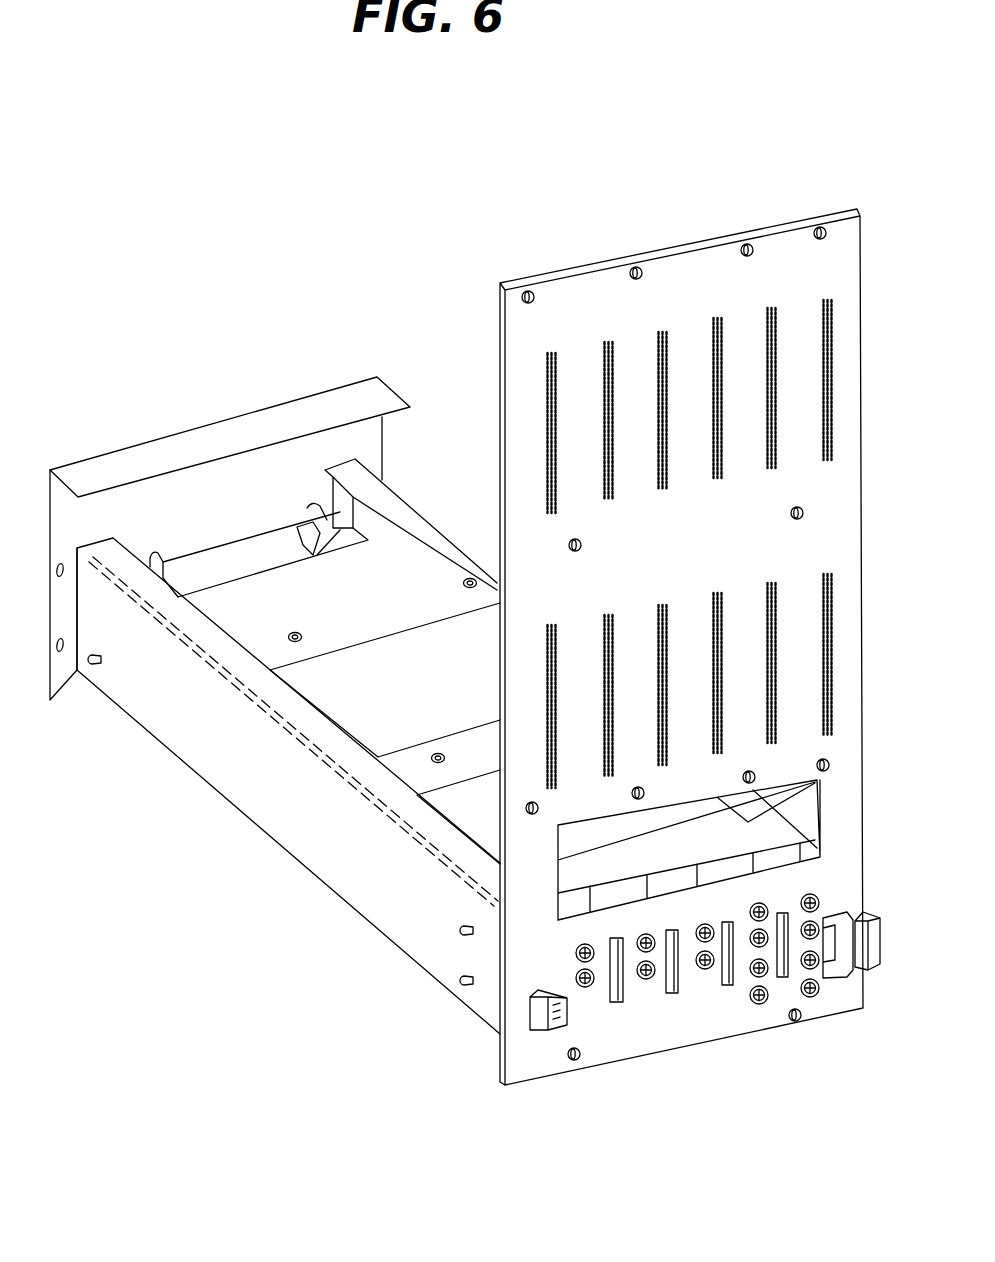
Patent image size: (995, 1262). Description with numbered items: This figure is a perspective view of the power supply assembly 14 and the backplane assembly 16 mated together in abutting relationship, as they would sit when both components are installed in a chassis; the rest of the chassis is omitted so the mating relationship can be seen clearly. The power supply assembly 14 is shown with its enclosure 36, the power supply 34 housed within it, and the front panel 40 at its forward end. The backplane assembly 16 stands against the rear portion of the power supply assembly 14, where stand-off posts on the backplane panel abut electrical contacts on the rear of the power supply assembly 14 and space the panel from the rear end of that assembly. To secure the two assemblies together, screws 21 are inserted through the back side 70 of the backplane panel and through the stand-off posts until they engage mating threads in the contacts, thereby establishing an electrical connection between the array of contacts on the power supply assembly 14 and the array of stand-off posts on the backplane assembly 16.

The power supply assembly 14 is at (243, 750).
The backplane assembly 16 is at (690, 601).
The screws 21 is at (759, 1007).
The power supply 34 is at (400, 725).
The enclosure 36 is at (137, 725).
The front panel 40 is at (217, 422).
The back side 70 is at (703, 272).